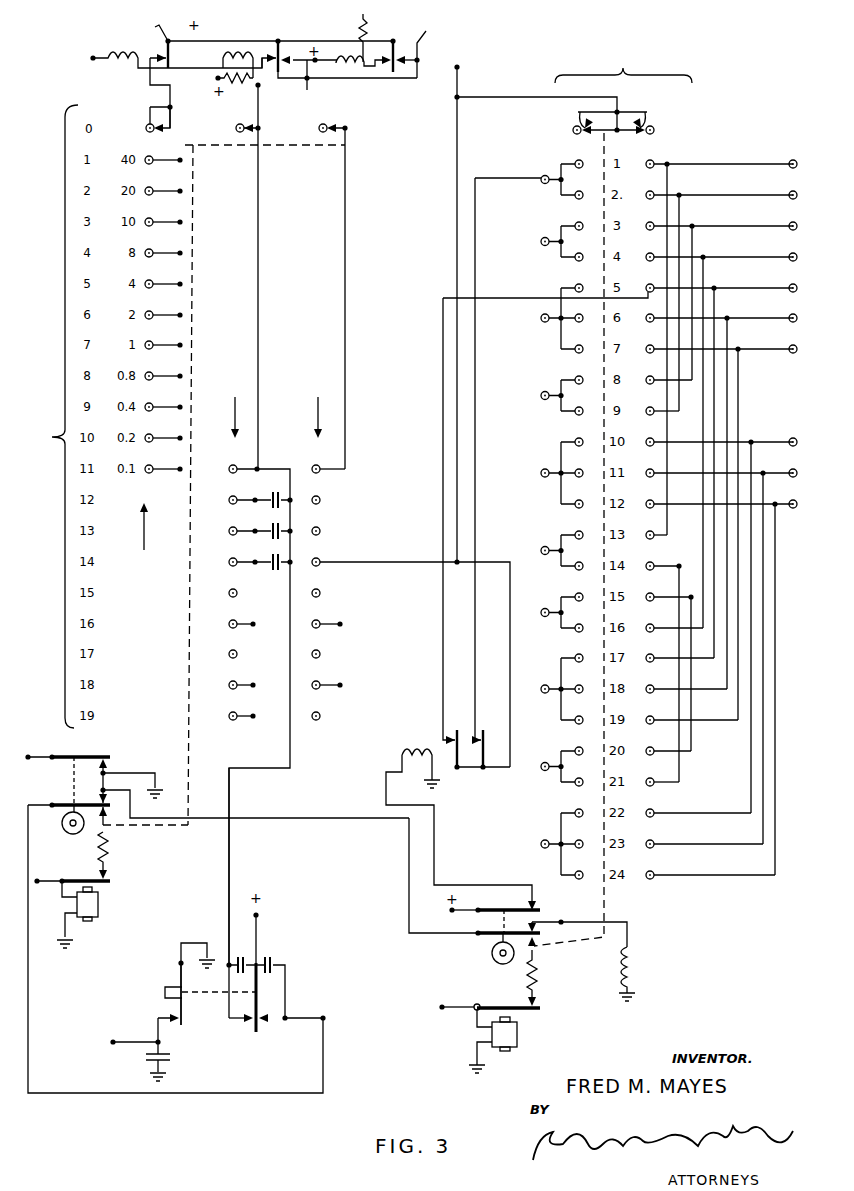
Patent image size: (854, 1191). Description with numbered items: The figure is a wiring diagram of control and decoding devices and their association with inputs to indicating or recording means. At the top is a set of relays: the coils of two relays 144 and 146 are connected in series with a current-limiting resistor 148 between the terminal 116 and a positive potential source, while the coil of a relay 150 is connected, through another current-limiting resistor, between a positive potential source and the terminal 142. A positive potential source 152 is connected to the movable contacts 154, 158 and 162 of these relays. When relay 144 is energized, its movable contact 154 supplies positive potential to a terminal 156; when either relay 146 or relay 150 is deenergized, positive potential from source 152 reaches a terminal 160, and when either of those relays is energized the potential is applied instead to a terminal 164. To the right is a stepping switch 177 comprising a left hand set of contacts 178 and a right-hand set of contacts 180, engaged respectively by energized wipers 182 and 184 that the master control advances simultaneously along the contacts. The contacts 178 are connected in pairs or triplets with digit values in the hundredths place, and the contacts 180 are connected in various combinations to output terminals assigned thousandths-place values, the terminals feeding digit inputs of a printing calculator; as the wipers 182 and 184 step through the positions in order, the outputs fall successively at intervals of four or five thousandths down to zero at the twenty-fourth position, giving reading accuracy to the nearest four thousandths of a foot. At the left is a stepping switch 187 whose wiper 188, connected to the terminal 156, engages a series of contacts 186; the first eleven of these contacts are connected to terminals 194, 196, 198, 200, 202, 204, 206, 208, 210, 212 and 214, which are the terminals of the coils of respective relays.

The terminal 116 is at (95, 54).
The terminal 142 is at (371, 14).
The relay 144 is at (120, 72).
The relay 146 is at (236, 52).
The current-limiting resistor 148 is at (240, 86).
The relay 150 is at (348, 56).
The positive potential source 152 is at (146, 28).
The movable contact 154 is at (170, 58).
The terminal 156 is at (172, 109).
The movable contact 158 is at (282, 46).
The terminal 160 is at (425, 32).
The movable contact 162 is at (419, 59).
The terminal 164 is at (307, 90).
The stepping switch 177 is at (623, 66).
The left hand set of contacts 178 is at (592, 155).
The right-hand set of contacts 180 is at (662, 155).
The wiper 182 is at (578, 112).
The wiper 184 is at (649, 112).
The series of contacts 186 is at (142, 539).
The stepping switch 187 is at (52, 416).
The wiper 188 is at (148, 135).
The terminal 194 is at (180, 160).
The terminal 196 is at (180, 191).
The terminal 198 is at (180, 222).
The terminal 200 is at (180, 253).
The terminal 202 is at (180, 284).
The terminal 204 is at (180, 315).
The terminal 206 is at (180, 345).
The terminal 208 is at (180, 376).
The terminal 210 is at (180, 407).
The terminal 212 is at (180, 438).
The terminal 214 is at (180, 469).